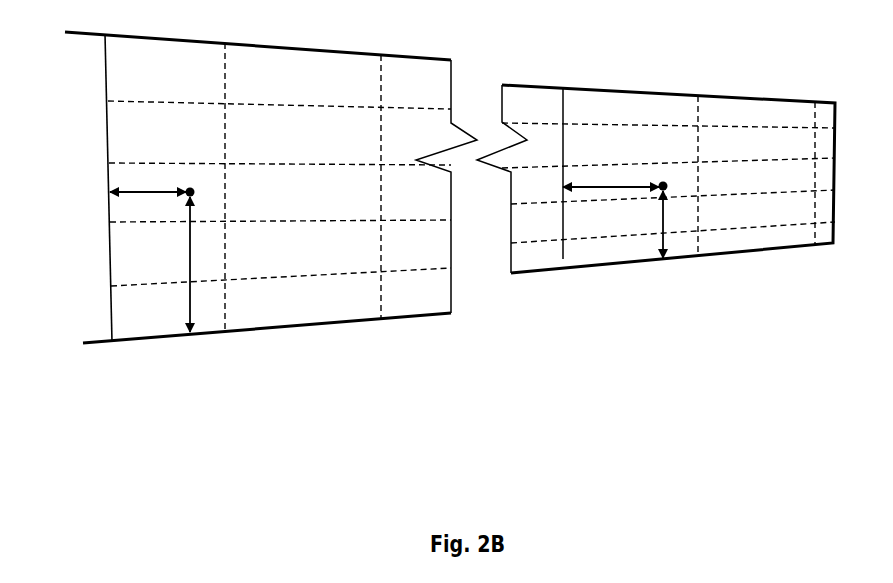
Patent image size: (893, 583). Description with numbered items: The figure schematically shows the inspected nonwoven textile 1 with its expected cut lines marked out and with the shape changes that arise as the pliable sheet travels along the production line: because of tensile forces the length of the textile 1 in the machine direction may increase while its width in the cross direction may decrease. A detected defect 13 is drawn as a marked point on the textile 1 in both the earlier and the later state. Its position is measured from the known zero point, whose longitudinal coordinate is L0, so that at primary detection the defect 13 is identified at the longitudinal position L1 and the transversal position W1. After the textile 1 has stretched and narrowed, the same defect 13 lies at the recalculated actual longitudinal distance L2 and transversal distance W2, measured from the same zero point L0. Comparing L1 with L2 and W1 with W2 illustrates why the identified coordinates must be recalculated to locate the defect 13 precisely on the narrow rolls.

The blade 1 is at (519, 279).
The defect 13 is at (190, 192).
The zero point longitudinal coordinate L0 is at (112, 342).
The identified longitudinal position of the defect L1 is at (148, 192).
The actual longitudinal distance L2 is at (615, 187).
The identified transversal position of the defect W1 is at (191, 268).
The actual transversal distance W2 is at (663, 230).